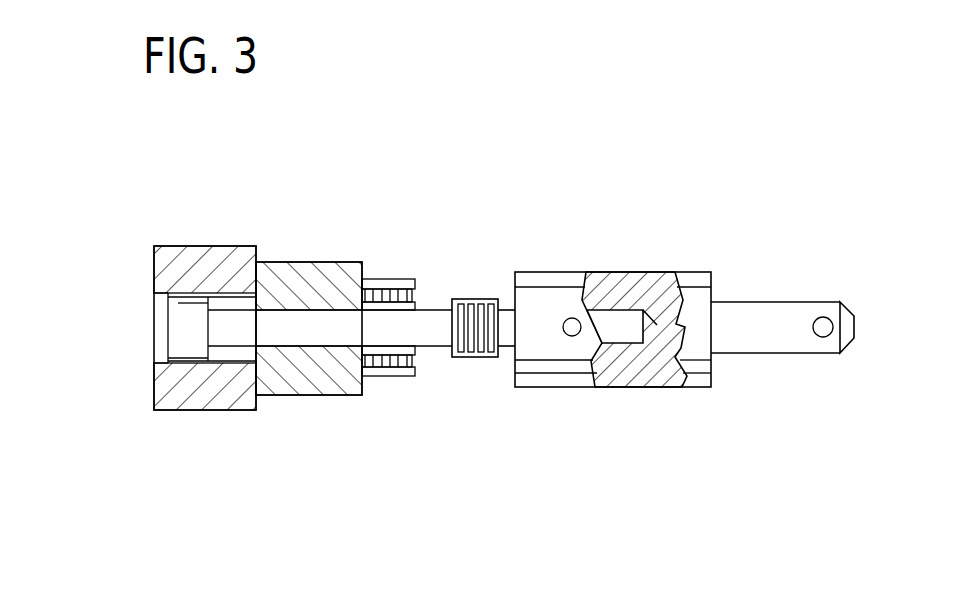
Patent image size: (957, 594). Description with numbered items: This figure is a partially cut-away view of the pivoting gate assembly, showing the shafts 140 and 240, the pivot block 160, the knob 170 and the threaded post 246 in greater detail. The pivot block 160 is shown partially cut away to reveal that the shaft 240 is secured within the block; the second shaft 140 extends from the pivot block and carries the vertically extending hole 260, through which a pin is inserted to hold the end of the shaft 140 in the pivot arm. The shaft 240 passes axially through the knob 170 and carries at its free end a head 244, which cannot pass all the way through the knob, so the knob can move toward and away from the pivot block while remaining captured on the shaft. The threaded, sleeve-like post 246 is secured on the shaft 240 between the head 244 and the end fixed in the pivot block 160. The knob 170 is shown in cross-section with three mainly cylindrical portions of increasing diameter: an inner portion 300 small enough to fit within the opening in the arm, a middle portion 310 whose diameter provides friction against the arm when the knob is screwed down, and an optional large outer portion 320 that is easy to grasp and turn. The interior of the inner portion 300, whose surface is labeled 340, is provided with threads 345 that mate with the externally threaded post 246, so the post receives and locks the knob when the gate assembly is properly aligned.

The knob 170 is at (150, 242).
The outer portion 320 is at (163, 283).
The head 244 is at (187, 323).
The middle portion 310 is at (288, 380).
The shaft 240 is at (618, 325).
The surface 340 is at (417, 303).
The threads 345 is at (376, 373).
The inner portion 300 is at (388, 372).
The threaded post 246 is at (477, 298).
The pivot block 160 is at (595, 395).
The shaft 140 is at (775, 302).
The vertically extending hole 260 is at (823, 337).